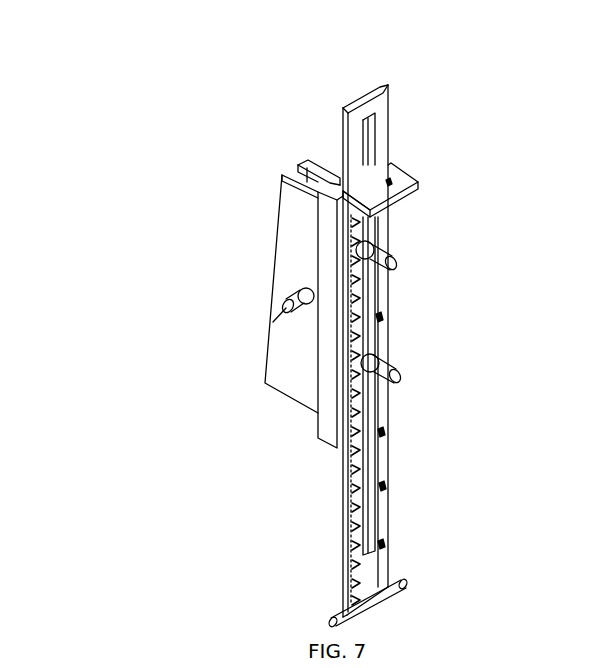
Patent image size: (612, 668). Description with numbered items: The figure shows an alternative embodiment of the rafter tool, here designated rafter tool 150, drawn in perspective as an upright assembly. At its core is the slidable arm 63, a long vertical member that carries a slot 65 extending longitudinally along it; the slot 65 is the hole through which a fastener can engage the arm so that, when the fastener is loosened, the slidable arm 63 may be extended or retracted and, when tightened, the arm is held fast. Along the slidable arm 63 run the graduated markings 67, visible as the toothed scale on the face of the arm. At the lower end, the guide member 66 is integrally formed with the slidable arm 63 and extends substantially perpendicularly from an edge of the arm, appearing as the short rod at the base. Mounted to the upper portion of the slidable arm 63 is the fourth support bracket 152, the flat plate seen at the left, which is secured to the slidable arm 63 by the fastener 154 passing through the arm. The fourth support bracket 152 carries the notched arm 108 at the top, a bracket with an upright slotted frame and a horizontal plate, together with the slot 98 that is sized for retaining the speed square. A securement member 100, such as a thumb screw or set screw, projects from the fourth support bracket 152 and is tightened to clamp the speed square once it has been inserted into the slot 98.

The rafter tool 150 is at (135, 187).
The slot 98 is at (303, 160).
The notched arm 108 is at (386, 188).
The securement member 100 is at (283, 305).
The fastener 154 is at (372, 355).
The fourth support bracket 152 is at (297, 385).
The slidable arm 63 is at (383, 470).
The slot 65 is at (368, 535).
The graduated markings 67 is at (350, 530).
The guide member 66 is at (340, 614).